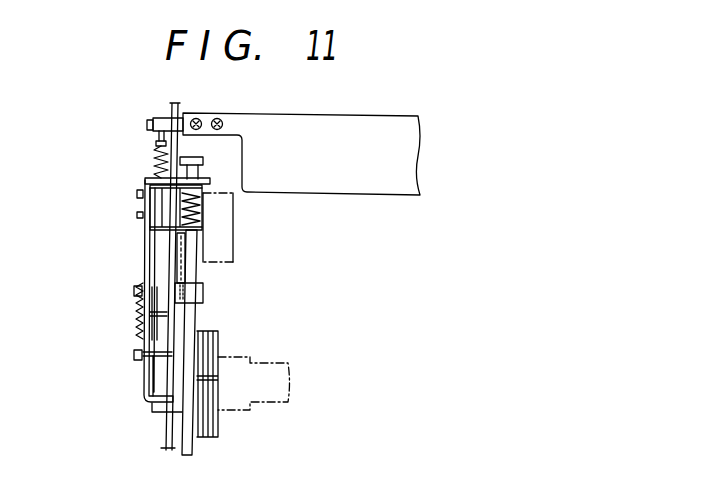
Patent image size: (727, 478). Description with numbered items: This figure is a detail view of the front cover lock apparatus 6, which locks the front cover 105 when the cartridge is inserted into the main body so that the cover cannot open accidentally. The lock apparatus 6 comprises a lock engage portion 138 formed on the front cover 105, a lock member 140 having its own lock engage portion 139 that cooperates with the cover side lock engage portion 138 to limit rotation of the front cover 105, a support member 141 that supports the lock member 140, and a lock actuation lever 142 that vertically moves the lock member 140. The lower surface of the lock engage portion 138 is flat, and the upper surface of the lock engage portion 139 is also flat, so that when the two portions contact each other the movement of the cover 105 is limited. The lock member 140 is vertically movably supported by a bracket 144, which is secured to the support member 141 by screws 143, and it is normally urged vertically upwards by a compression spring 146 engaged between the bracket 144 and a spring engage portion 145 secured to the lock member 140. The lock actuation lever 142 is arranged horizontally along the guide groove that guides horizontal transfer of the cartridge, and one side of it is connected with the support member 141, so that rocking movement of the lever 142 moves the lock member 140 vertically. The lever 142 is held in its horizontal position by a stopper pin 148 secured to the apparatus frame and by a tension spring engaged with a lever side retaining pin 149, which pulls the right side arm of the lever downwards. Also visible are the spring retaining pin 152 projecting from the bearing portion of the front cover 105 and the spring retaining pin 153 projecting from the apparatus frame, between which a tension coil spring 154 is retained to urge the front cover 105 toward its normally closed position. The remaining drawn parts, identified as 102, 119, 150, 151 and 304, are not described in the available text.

The front cover lock apparatus 6 is at (122, 222).
The lever 102 is at (170, 265).
The front cover 105 is at (348, 133).
The holder 119 is at (148, 250).
The lock engage portion 138 is at (179, 116).
The lock engage portion 139 is at (203, 148).
The lock member 140 is at (203, 174).
The support member 141 is at (148, 263).
The lock actuation lever 142 is at (203, 287).
The screws 143 is at (138, 193).
The bracket 144 is at (205, 232).
The spring engage portion 145 is at (205, 200).
The compression spring 146 is at (203, 213).
The stopper pin 148 is at (160, 333).
The lever side retaining pin 149 is at (134, 291).
The screw 150 is at (133, 356).
The rack 151 is at (137, 326).
The spring retaining pin 152 is at (145, 133).
The spring retaining pin 153 is at (148, 170).
The tension coil spring 154 is at (147, 157).
The shaft 304 is at (208, 323).